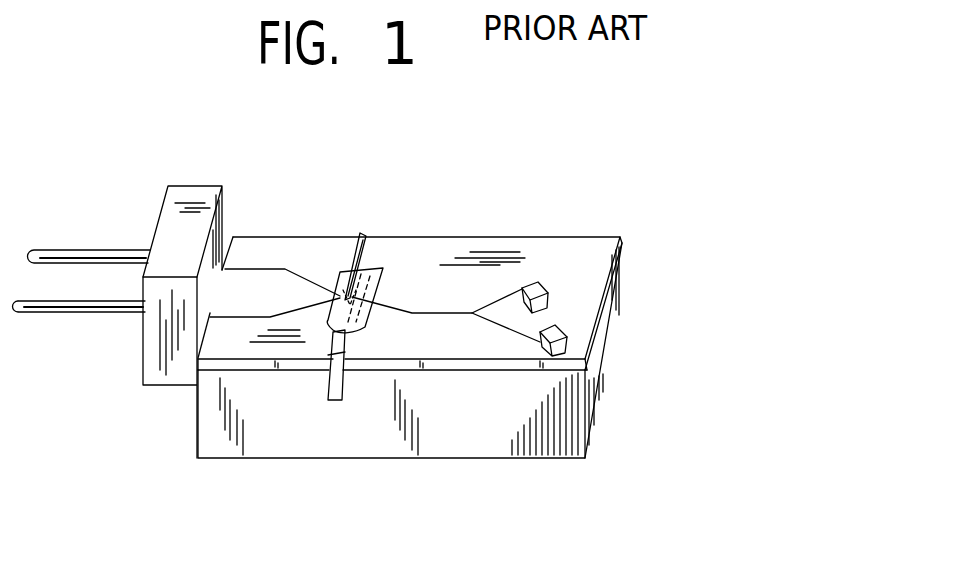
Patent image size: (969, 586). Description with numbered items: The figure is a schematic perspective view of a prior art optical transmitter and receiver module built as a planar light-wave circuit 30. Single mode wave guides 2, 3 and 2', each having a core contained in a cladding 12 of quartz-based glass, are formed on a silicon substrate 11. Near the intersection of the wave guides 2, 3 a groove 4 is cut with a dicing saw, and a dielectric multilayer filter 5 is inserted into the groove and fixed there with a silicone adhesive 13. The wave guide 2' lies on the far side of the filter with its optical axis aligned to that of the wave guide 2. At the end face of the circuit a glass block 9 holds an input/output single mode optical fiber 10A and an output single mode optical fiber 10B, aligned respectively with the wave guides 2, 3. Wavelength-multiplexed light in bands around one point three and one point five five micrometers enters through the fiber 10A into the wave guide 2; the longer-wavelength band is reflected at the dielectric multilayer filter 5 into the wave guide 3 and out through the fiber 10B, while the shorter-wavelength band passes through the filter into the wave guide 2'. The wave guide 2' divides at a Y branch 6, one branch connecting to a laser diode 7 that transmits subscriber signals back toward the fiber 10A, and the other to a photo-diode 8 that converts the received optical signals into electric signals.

The single mode wave guide 2 is at (275, 245).
The single mode wave guide 2' is at (412, 243).
The single mode wave guide 3 is at (242, 320).
The groove 4 is at (331, 400).
The dielectric multilayer filter 5 is at (356, 233).
The Y branch 6 is at (472, 313).
The laser diode 7 is at (543, 283).
The photo-diode 8 is at (555, 328).
The glass block 9 is at (193, 190).
The input/output single mode optical fiber 10A is at (86, 250).
The output single mode optical fiber 10B is at (67, 308).
The silicon substrate 11 is at (605, 347).
The cladding 12 is at (495, 362).
The silicone adhesive 13 is at (383, 268).
The planar light-wave circuit 30 is at (505, 193).